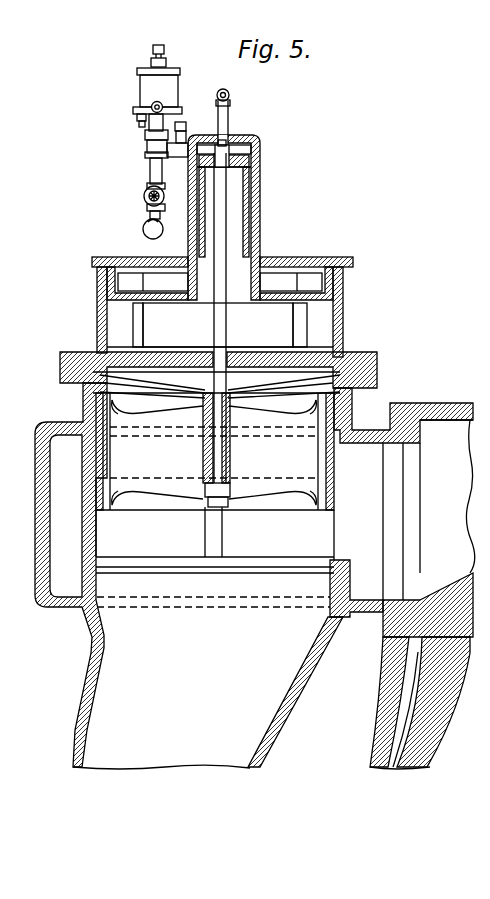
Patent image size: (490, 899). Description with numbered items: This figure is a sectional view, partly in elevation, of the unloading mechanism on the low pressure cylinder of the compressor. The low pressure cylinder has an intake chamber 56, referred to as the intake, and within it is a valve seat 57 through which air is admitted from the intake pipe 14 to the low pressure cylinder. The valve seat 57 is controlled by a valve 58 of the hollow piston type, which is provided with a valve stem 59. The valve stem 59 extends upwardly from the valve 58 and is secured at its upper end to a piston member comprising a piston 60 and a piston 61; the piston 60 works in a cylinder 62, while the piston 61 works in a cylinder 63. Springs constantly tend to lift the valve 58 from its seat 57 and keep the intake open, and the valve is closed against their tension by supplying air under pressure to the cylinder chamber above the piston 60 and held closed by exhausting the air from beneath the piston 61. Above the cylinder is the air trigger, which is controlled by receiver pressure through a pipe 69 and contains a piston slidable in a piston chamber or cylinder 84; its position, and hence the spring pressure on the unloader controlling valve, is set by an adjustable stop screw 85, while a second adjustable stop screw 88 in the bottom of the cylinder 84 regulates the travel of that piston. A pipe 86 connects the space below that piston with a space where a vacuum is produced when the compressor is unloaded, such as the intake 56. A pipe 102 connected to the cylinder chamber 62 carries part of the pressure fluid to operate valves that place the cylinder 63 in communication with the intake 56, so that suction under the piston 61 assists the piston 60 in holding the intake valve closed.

The intake pipe 14 is at (290, 697).
The intake chamber 56 is at (62, 525).
The valve seat 57 is at (333, 561).
The valve 58 is at (334, 498).
The valve stem 59 is at (226, 330).
The piston 60 is at (247, 170).
The piston 61 is at (337, 288).
The cylinder 62 is at (258, 193).
The cylinder 63 is at (343, 320).
The pipe 69 is at (151, 170).
The piston chamber or cylinder 84 is at (139, 90).
The adjustable stop screw 85 is at (152, 52).
The pipe 86 is at (163, 106).
The adjustable stop screw 88 is at (137, 117).
The pipe 102 is at (229, 112).